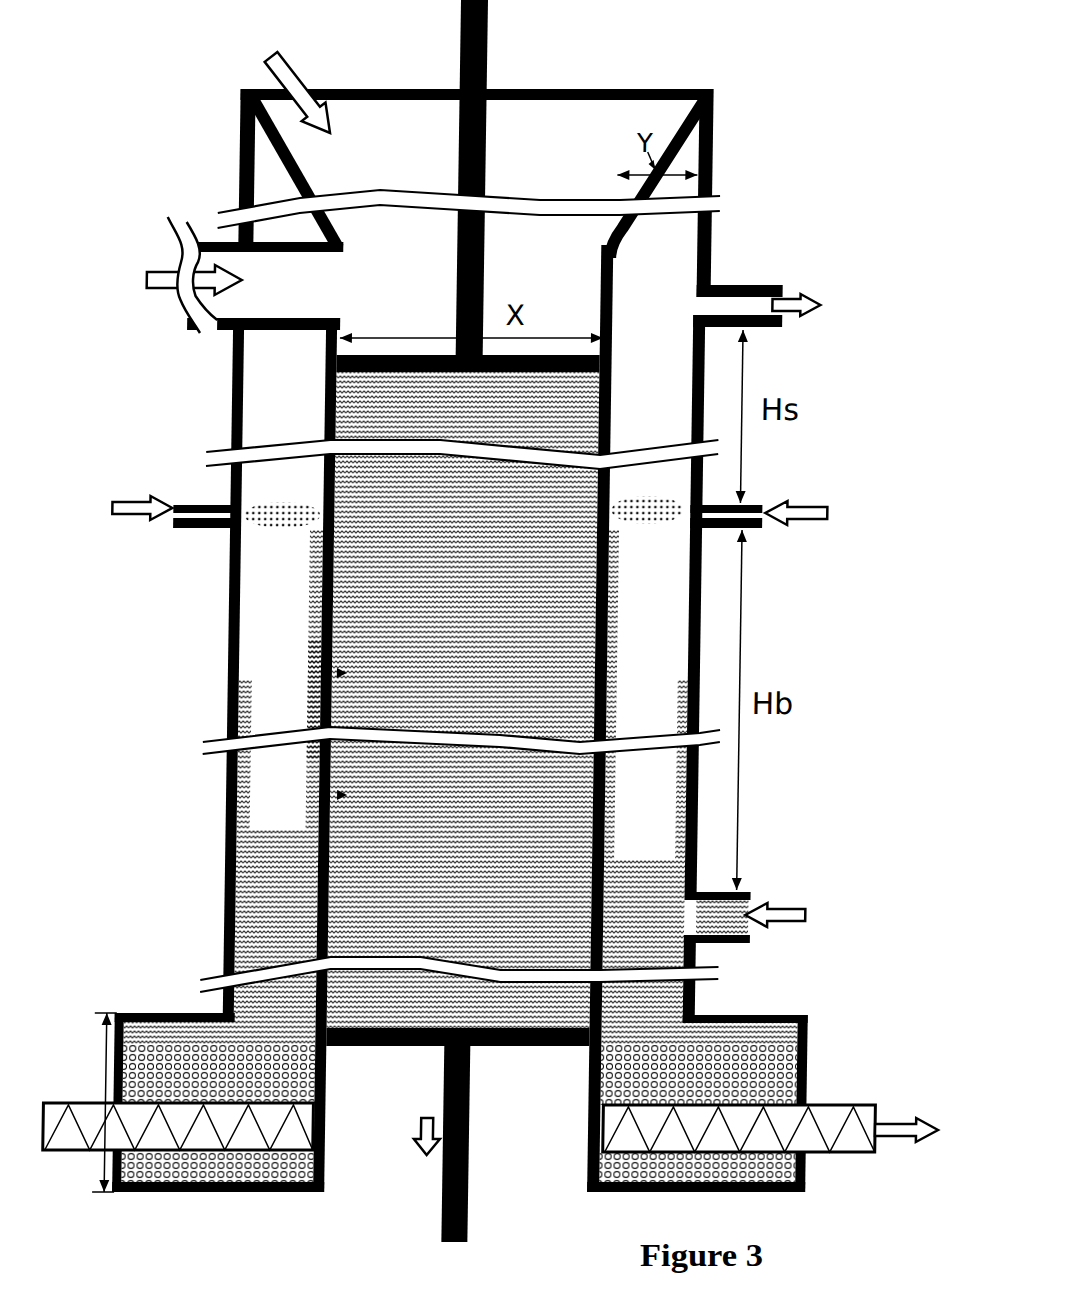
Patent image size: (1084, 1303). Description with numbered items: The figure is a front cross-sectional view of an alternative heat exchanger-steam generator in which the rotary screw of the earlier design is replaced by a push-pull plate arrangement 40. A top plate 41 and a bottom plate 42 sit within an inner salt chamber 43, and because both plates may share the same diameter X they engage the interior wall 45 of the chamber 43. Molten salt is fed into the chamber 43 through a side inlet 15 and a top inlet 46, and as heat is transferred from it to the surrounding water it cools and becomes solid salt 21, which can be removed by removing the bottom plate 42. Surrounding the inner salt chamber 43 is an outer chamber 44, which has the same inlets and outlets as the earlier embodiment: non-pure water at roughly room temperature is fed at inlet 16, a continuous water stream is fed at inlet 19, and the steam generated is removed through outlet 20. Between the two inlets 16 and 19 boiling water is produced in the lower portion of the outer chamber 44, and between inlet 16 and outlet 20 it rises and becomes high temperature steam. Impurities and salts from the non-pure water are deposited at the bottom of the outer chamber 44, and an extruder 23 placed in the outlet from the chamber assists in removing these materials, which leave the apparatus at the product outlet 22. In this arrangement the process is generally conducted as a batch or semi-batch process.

The side inlet 15 is at (159, 285).
The inlet 16 is at (145, 512).
The inlet 19 is at (800, 900).
The outlet 20 is at (777, 306).
The solid salt 21 is at (370, 867).
The product outlet 22 is at (914, 1123).
The extruder 23 is at (857, 1107).
The push-pull plate arrangement 40 is at (490, 60).
The top plate 41 is at (403, 354).
The bottom plate 42 is at (408, 1050).
The inner salt chamber 43 is at (568, 334).
The outer chamber 44 is at (677, 635).
The interior wall 45 is at (320, 687).
The top inlet 46 is at (299, 77).